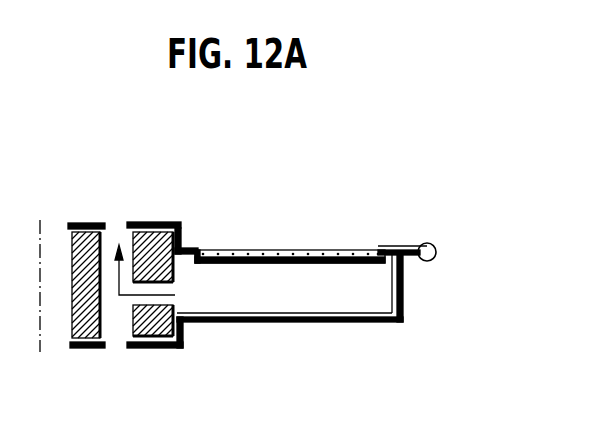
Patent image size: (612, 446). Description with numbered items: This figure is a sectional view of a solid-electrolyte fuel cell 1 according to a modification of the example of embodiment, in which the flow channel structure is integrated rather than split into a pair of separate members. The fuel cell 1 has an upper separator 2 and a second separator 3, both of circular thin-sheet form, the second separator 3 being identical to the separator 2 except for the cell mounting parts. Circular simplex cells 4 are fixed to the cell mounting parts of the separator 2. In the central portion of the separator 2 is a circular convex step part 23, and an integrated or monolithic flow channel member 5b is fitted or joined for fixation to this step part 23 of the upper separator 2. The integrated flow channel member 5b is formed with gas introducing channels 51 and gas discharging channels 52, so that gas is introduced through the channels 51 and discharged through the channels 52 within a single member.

The solid-electrolyte fuel cell 1 is at (407, 210).
The separator 2 is at (276, 240).
The second separator 3 is at (287, 324).
The simplex cell 4 is at (352, 249).
The integrated flow channel member 5b is at (152, 237).
The circular convex step part 23 is at (185, 236).
The gas introducing channel 51 is at (55, 288).
The gas discharging channel 52 is at (110, 278).